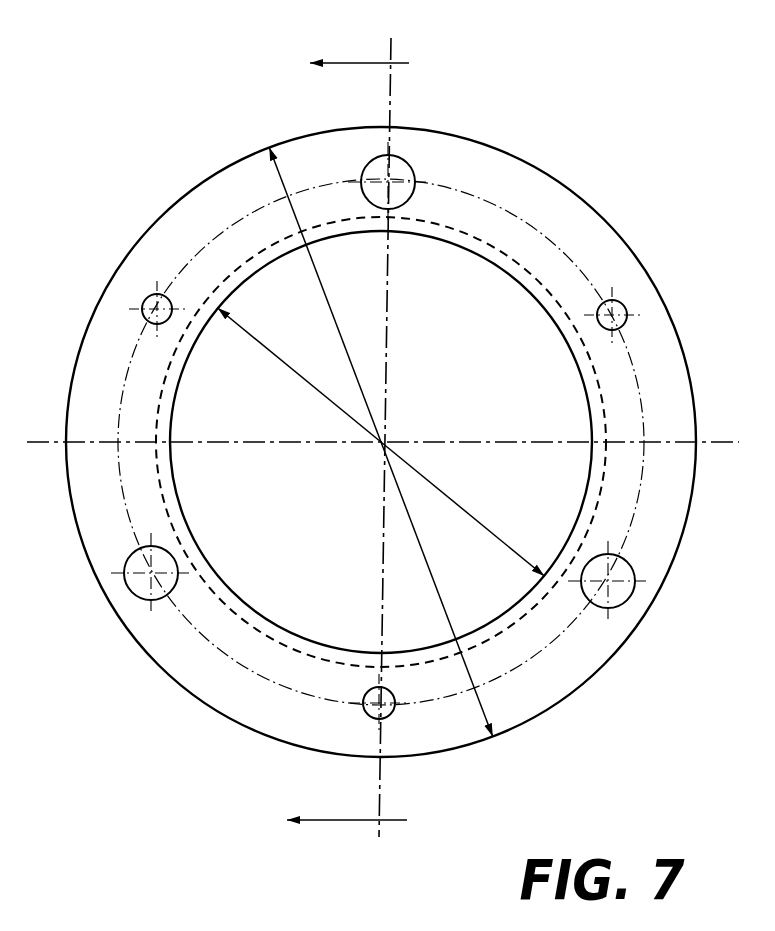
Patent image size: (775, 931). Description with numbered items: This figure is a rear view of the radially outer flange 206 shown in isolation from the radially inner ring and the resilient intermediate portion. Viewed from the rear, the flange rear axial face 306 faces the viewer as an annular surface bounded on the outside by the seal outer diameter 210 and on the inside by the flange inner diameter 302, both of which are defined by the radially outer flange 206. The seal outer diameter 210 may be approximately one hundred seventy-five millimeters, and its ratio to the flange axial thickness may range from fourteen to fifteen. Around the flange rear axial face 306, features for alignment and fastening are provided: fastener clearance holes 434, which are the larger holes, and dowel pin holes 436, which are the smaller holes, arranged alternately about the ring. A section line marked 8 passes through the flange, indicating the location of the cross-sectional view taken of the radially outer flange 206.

The radially outer flange 206 is at (490, 90).
The flange rear axial face 306 is at (548, 197).
The seal outer diameter 210 is at (480, 703).
The flange inner diameter 302 is at (537, 580).
The fastener clearance holes 434 is at (400, 155).
The dowel pin holes 436 is at (146, 294).
The section line 8- 8 is at (338, 63).